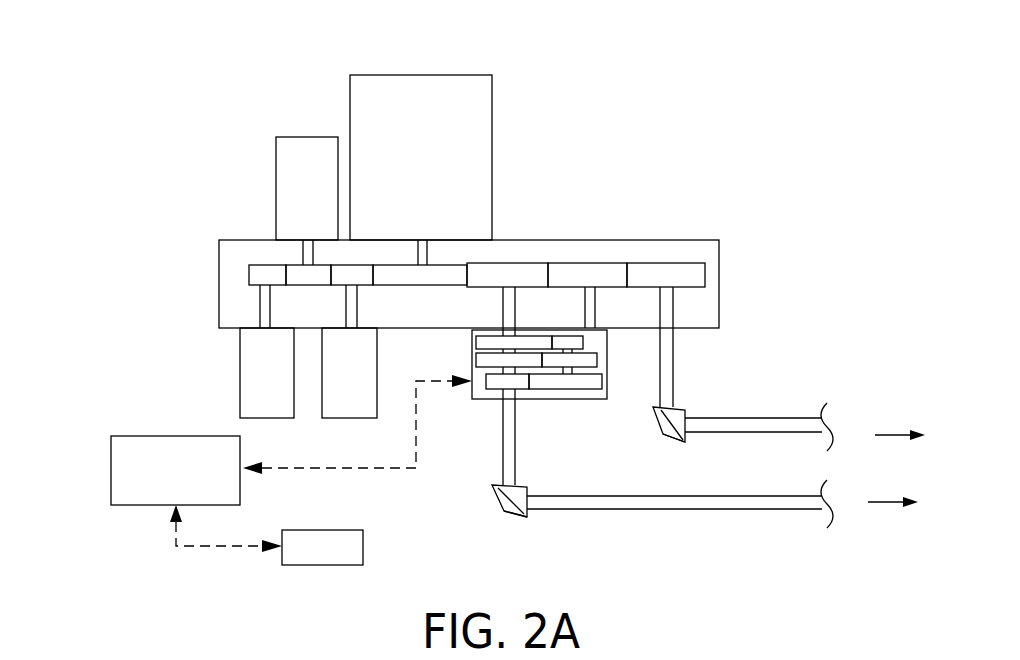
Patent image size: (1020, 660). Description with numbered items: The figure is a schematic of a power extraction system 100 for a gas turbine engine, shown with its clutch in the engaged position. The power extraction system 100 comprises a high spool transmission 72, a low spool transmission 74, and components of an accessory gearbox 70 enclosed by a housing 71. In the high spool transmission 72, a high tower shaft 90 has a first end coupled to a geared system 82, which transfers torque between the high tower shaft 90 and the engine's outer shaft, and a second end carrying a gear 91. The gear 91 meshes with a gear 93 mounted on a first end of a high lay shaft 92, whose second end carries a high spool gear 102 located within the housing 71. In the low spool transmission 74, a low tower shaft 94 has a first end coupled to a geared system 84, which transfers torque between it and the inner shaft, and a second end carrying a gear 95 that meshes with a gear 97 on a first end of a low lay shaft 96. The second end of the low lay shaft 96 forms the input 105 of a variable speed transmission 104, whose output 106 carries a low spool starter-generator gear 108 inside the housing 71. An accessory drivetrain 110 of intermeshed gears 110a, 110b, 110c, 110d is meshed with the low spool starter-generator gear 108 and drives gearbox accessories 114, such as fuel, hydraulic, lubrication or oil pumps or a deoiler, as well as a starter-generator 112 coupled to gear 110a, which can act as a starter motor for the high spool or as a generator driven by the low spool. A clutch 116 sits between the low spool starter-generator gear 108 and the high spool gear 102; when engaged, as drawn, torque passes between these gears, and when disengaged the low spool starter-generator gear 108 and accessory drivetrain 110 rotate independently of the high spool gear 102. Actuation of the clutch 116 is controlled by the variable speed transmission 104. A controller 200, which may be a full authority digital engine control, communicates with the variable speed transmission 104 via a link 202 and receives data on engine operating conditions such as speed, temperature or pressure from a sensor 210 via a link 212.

The power extraction system 100 is at (94, 117).
The accessory gearbox 70 is at (745, 212).
The housing 71 is at (645, 240).
The high spool transmission 72 is at (769, 378).
The low spool transmission 74 is at (640, 544).
The geared system 82 is at (886, 438).
The geared system 84 is at (881, 503).
The high tower shaft 90 is at (730, 430).
The gear 91 is at (672, 442).
The high lay shaft 92 is at (665, 351).
The gear 93 is at (658, 422).
The low tower shaft 94 is at (590, 496).
The gear 95 is at (522, 518).
The low lay shaft 96 is at (503, 452).
The gear 97 is at (497, 502).
The high spool gear 102 is at (690, 274).
The variable speed transmission 104 is at (552, 400).
The input 105 is at (505, 398).
The output 106 is at (512, 307).
The low spool starter-generator gear 108 is at (530, 268).
The accessory drivetrain 110 is at (242, 255).
The gear 110a is at (420, 280).
The gear 110b is at (365, 283).
The gear 110c is at (302, 281).
The gear 110d is at (250, 271).
The starter-generator 112 is at (433, 171).
The gearbox accessory 114 is at (323, 195).
The clutch 116 is at (600, 268).
The controller 200 is at (110, 487).
The link 202 is at (382, 470).
The sensor 210 is at (337, 558).
The link 212 is at (185, 550).